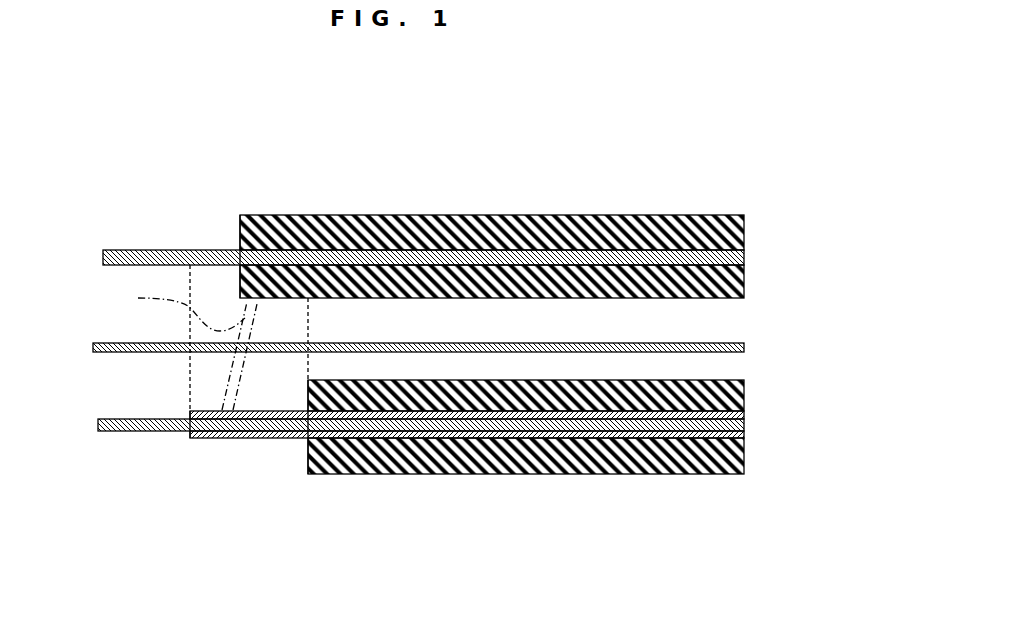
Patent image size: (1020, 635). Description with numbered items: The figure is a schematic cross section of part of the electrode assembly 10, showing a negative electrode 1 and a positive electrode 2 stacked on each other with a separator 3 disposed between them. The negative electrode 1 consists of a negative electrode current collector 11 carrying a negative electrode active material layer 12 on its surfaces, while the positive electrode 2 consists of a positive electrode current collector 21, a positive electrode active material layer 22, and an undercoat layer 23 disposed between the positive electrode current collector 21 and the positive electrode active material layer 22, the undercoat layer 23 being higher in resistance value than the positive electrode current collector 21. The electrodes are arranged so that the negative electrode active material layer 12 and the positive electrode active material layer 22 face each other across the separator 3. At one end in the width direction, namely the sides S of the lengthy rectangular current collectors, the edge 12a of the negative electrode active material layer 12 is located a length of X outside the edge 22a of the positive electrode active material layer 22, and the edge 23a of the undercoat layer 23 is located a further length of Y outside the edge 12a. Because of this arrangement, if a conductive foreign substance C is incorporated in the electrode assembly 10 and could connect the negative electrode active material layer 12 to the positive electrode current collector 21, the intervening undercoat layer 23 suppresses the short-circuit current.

The electrode assembly 10 is at (708, 117).
The negative electrode 1 is at (450, 253).
The positive electrode 2 is at (436, 438).
The separator 3 is at (560, 343).
The negative electrode current collector 11 is at (143, 249).
The negative electrode active material layer 12 is at (437, 222).
The edge of the negative electrode active material layer 12a is at (240, 226).
The positive electrode current collector 21 is at (114, 419).
The positive electrode active material layer 22 is at (533, 380).
The edge of the positive electrode active material layer 22a is at (307, 462).
The undercoat layer 23 is at (243, 411).
The edge of the undercoat layer 23a is at (190, 435).
The sides S is at (101, 257).
The conductive foreign substance C is at (189, 351).
The length X is at (240, 303).
The length Y is at (240, 272).